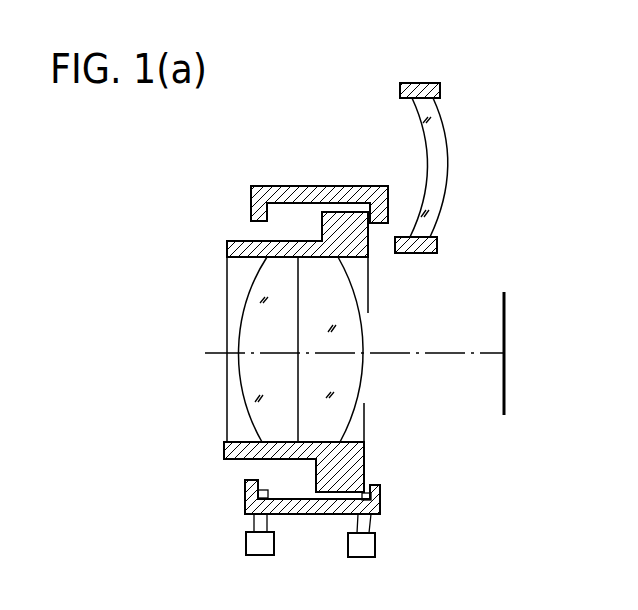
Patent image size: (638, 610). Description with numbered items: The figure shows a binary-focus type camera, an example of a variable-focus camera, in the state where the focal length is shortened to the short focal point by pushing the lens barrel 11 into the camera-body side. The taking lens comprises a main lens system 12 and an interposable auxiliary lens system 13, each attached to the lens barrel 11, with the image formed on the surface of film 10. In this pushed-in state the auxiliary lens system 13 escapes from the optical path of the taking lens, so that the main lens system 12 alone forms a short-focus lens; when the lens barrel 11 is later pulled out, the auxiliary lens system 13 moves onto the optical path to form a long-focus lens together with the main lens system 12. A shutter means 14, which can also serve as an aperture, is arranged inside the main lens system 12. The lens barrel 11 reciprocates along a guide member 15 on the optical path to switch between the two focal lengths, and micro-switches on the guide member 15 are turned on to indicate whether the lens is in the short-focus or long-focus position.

The surface of film 10 is at (504, 405).
The lens barrel 11 is at (224, 457).
The main lens system 12 is at (257, 388).
The auxiliary lens system 13 is at (435, 148).
The shutter means 14 is at (297, 316).
The guide member 15 is at (310, 514).